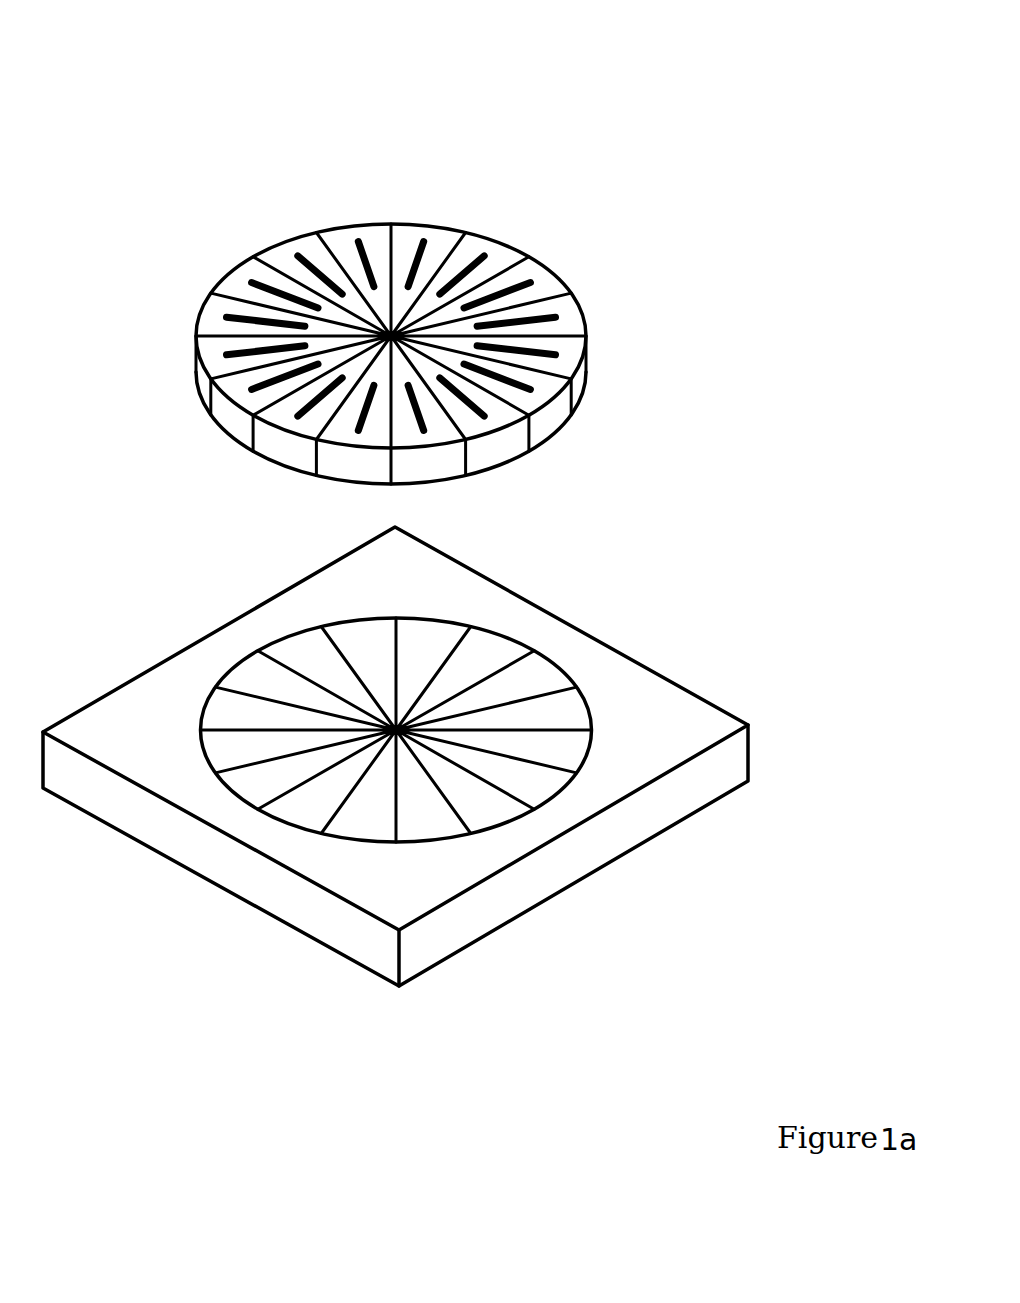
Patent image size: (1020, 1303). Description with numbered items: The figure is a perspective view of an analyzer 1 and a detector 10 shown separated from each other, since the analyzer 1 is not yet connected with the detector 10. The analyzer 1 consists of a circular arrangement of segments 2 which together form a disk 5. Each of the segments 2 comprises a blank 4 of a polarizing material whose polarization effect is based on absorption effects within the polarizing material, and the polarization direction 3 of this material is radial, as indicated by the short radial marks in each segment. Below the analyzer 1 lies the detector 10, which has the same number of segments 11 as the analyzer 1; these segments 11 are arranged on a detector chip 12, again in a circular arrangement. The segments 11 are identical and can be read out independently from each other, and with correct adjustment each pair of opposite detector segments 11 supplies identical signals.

The analyzer 1 is at (437, 257).
The segments 2 is at (404, 240).
The polarization direction 3 is at (322, 272).
The blank 4 is at (236, 428).
The disk 5 is at (590, 310).
The detector 10 is at (450, 760).
The segments 11 is at (478, 652).
The detector chip 12 is at (349, 867).